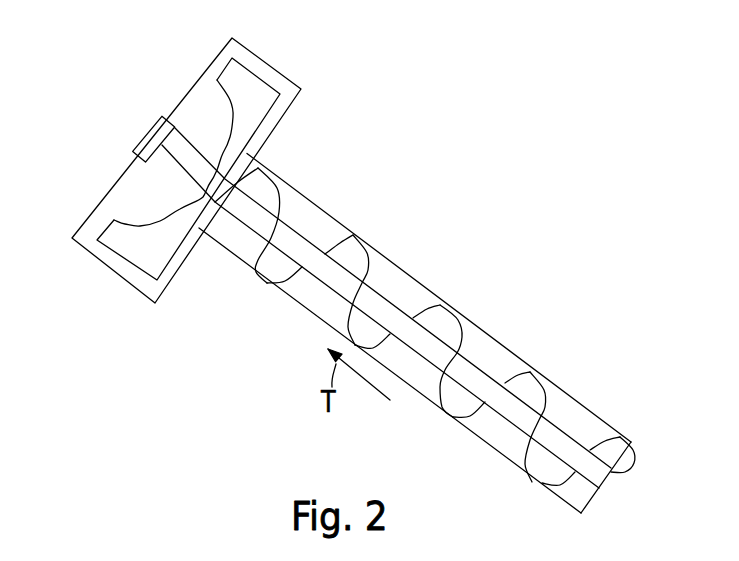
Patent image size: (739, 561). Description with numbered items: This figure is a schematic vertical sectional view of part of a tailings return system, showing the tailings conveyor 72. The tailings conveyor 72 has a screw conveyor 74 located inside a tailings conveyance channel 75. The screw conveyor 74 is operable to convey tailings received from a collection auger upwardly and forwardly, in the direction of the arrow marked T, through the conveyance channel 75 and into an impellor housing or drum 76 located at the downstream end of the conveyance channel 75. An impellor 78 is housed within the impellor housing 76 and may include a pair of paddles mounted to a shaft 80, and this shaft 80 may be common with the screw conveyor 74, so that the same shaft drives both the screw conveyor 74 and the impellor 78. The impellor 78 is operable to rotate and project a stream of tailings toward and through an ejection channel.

The tailings conveyor 72 is at (357, 237).
The screw conveyor 74 is at (378, 257).
The tailings conveyance channel 75 is at (511, 352).
The impellor housing 76 is at (128, 283).
The impellor 78 is at (300, 88).
The shaft 80 is at (581, 443).